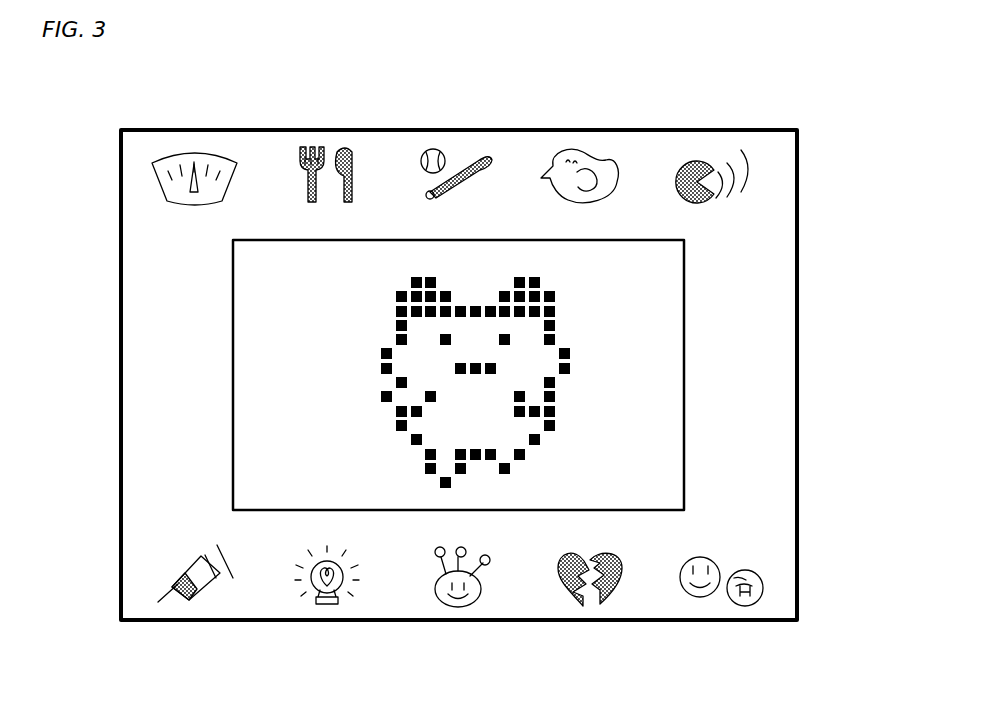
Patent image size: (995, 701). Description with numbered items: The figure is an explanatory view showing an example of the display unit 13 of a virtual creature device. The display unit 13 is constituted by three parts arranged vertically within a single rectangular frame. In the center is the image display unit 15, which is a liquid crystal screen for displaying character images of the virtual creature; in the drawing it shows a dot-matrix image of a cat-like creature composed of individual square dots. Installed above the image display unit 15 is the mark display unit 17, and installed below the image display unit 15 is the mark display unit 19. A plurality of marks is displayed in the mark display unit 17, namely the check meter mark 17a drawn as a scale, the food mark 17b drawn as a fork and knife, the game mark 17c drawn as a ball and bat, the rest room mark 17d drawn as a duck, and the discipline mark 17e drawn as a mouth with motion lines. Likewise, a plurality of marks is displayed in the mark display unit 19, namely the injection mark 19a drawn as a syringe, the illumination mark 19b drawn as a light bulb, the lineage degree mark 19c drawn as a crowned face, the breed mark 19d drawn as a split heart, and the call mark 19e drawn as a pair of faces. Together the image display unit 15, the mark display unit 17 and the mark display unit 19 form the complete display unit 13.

The display unit 13 is at (858, 330).
The image display unit 15 is at (668, 370).
The mark display unit 17 is at (762, 205).
The mark display unit 19 is at (773, 575).
The check meter mark 17a is at (180, 148).
The food mark 17b is at (333, 150).
The game mark 17c is at (456, 160).
The rest room mark 17d is at (594, 162).
The discipline mark 17e is at (718, 165).
The injection mark 19a is at (197, 595).
The illumination mark 19b is at (327, 605).
The lineage degree mark 19c is at (453, 607).
The breed mark 19d is at (584, 606).
The call mark 19e is at (728, 608).